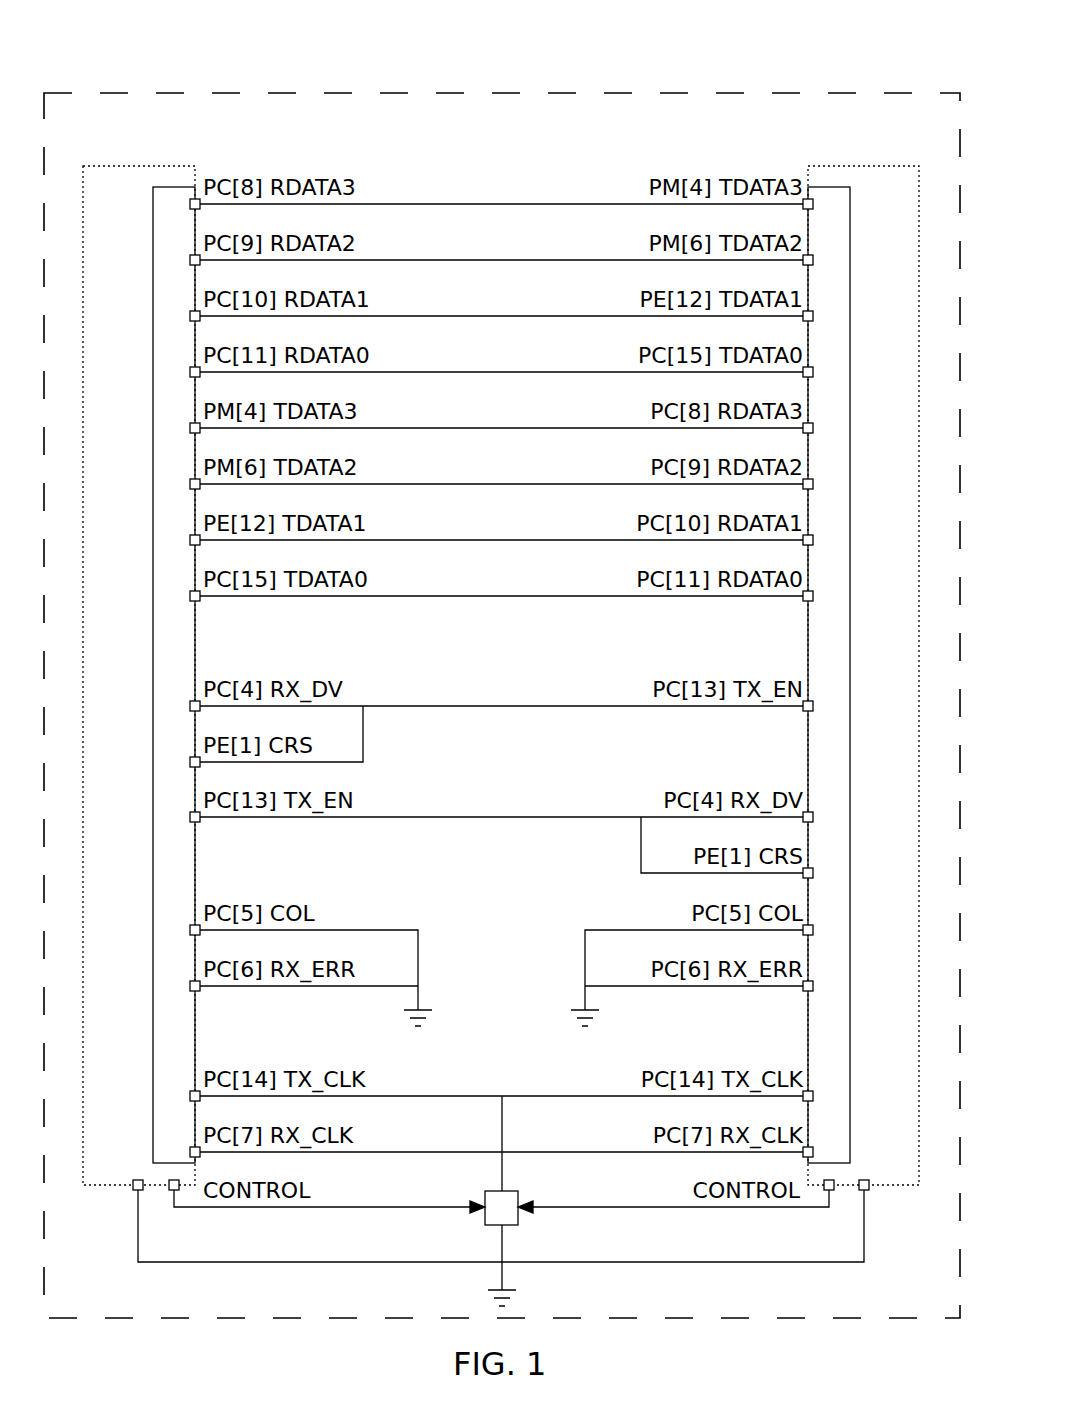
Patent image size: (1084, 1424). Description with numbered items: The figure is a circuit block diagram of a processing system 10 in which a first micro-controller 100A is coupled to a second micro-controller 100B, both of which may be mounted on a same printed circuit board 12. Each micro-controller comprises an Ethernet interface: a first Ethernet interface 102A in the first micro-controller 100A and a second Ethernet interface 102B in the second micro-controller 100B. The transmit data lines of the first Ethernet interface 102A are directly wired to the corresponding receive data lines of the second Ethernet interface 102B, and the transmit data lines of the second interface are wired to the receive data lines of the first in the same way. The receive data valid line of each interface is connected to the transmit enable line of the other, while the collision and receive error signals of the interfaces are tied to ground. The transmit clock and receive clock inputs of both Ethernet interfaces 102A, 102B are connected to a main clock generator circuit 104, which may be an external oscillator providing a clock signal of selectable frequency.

The processing system 10 is at (372, 66).
The printed circuit board 12 is at (745, 108).
The first micro-controller 100A is at (148, 178).
The second micro-controller 100B is at (855, 178).
The first Ethernet interface 102A is at (158, 300).
The second Ethernet interface 102B is at (845, 300).
The main clock generator circuit 104 is at (505, 1218).